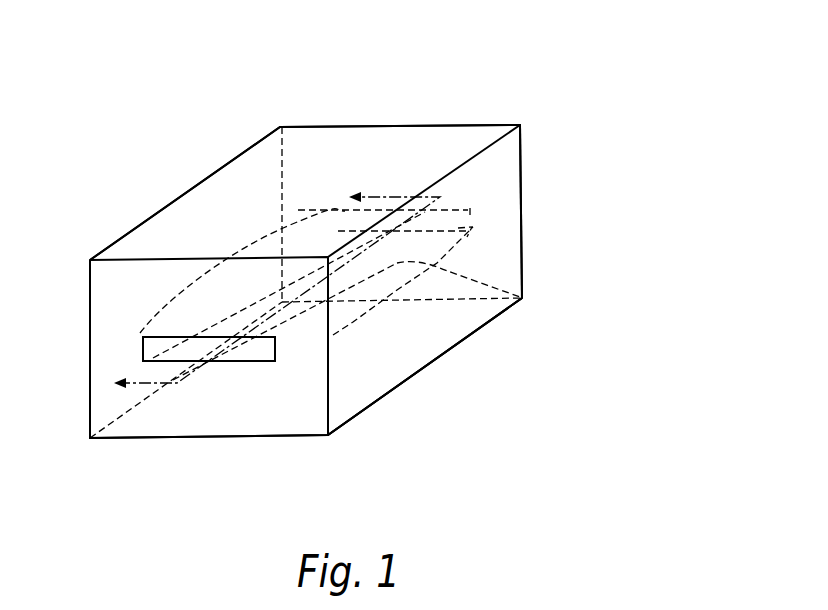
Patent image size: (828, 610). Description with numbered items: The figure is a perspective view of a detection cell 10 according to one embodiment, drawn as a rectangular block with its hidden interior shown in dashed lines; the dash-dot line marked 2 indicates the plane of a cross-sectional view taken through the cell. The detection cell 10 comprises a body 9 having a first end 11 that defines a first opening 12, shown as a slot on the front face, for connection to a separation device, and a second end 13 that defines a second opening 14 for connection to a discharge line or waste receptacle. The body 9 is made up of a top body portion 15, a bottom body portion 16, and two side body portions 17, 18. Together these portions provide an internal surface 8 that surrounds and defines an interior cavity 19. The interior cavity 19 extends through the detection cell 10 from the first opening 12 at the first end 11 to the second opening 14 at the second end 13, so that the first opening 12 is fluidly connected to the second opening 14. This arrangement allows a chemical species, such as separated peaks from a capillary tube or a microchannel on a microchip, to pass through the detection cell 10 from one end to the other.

The section line 2- 2 is at (277, 297).
The internal surface 8 is at (298, 225).
The body 9 is at (520, 124).
The detection cell 10 is at (614, 148).
The first end 11 is at (298, 423).
The first opening 12 is at (246, 352).
The second end 13 is at (495, 259).
The second opening 14 is at (472, 223).
The top body portion 15 is at (206, 226).
The bottom body portion 16 is at (165, 420).
The side body portion 17 is at (100, 295).
The side body portion 18 is at (430, 335).
The interior cavity 19 is at (522, 298).